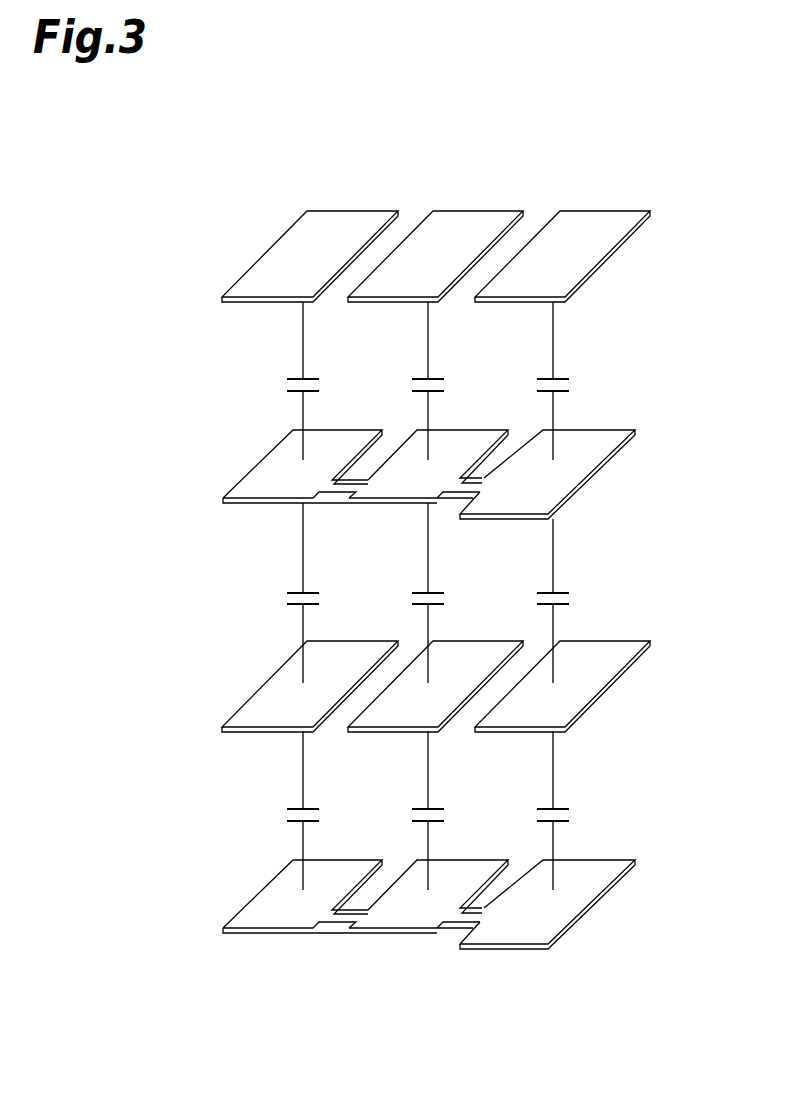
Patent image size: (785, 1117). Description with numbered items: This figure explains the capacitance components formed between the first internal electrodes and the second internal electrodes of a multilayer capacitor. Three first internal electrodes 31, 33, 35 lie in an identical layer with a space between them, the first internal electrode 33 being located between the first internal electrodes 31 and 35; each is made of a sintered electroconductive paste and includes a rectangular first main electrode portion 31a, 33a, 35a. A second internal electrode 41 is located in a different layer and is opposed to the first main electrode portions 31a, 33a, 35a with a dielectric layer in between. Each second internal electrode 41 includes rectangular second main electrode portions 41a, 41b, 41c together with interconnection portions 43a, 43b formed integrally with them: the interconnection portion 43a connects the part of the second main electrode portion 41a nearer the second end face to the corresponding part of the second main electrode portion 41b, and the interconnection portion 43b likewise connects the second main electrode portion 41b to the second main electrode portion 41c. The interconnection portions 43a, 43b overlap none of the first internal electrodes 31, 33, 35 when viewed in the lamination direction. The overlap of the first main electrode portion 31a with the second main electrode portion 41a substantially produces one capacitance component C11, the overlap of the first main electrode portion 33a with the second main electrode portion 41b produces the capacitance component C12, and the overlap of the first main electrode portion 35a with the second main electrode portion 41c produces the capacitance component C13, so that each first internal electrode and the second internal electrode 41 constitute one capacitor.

The first internal electrode 31 is at (278, 240).
The first main electrode portion 31a is at (275, 275).
The first internal electrode 33 is at (459, 211).
The first main electrode portion 33a is at (422, 273).
The first internal electrode 35 is at (633, 240).
The first main electrode portion 35a is at (537, 278).
The second internal electrode 41 is at (633, 442).
The second main electrode portion 41a is at (277, 478).
The second main electrode portion 41b is at (453, 455).
The second main electrode portion 41c is at (560, 478).
The interconnection portion 43a is at (345, 487).
The interconnection portion 43b is at (478, 483).
The capacitance component C11 is at (317, 369).
The capacitance component C12 is at (442, 369).
The capacitance component C13 is at (569, 369).